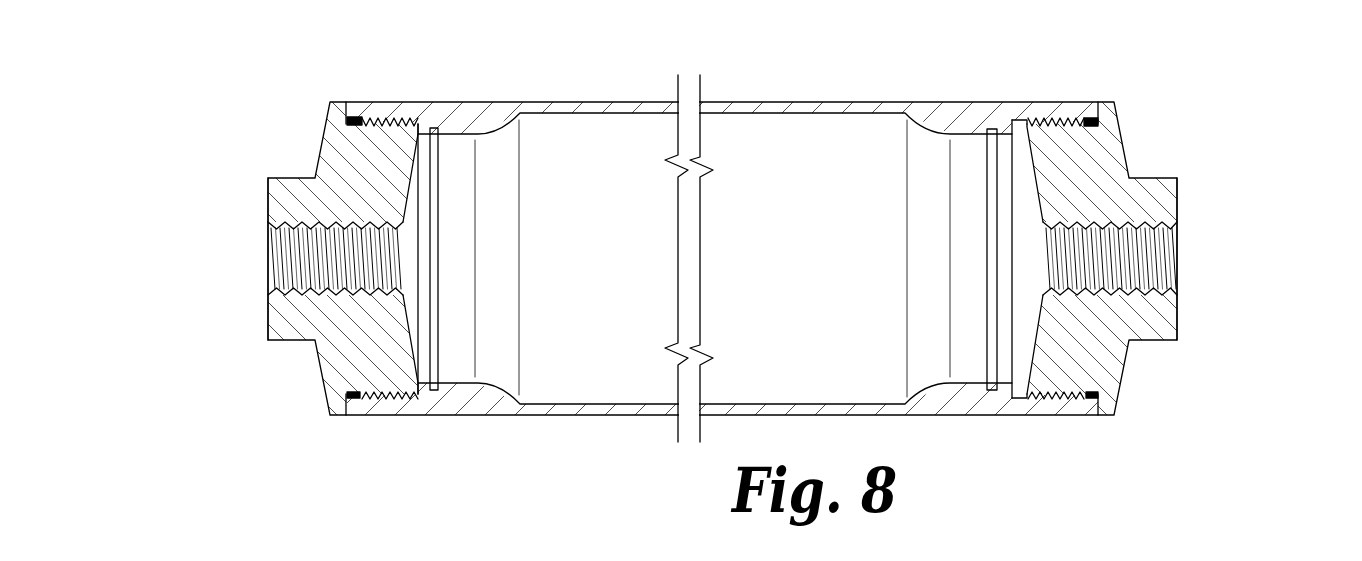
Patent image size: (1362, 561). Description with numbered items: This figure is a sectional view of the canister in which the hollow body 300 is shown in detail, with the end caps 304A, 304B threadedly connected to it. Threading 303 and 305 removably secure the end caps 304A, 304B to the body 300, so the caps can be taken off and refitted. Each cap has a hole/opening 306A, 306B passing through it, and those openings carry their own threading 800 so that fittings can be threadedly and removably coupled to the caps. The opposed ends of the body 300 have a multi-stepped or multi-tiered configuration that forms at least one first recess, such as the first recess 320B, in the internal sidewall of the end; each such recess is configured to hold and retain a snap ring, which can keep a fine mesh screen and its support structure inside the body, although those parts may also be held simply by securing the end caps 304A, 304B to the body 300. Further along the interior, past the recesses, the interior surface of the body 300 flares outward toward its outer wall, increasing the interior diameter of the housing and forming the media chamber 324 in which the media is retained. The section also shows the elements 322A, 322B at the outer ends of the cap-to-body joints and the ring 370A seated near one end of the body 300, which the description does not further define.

The hollow body 300 is at (611, 95).
The end cap 304A is at (357, 158).
The end cap 304B is at (1093, 157).
The threading 800 is at (297, 243).
The hole/opening 306A is at (240, 258).
The hole/opening 306B is at (1205, 260).
The first seal 322A is at (349, 117).
The second seal 322B is at (1092, 117).
The threading 303 is at (373, 394).
The threading 305 is at (385, 378).
The ring 370A is at (433, 130).
The first recess 320B is at (990, 130).
The media chamber 324 is at (810, 267).